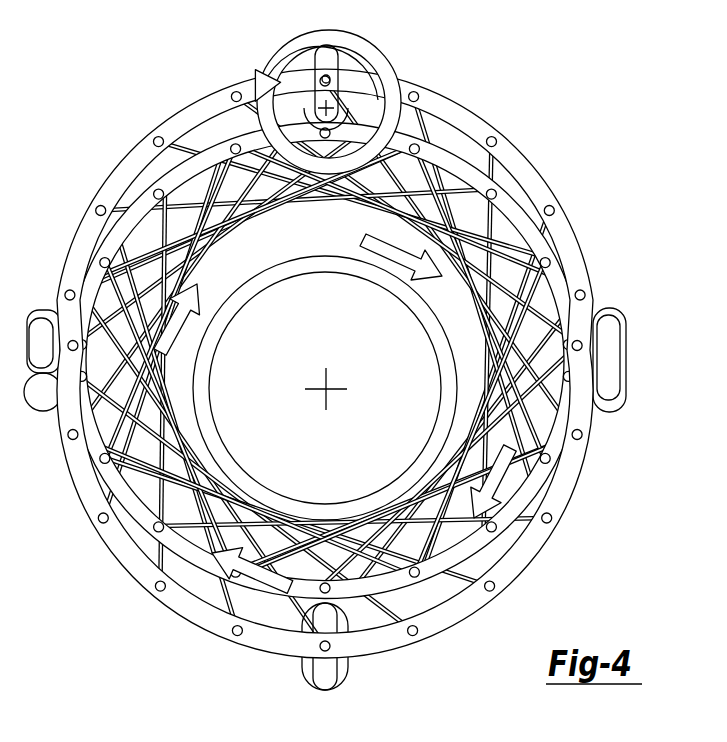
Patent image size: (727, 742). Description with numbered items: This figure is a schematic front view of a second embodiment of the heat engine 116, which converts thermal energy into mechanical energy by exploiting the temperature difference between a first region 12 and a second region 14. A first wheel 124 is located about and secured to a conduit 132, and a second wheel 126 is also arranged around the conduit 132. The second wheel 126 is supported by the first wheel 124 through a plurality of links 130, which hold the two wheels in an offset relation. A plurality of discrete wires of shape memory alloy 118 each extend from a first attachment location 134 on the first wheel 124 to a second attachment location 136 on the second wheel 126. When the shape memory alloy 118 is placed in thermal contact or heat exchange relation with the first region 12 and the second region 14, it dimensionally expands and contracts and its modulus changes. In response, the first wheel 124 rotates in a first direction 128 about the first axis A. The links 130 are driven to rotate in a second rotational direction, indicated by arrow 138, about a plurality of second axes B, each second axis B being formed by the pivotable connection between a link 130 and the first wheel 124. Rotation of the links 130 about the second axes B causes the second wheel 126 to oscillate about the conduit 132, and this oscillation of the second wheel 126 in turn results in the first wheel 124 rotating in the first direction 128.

The first region 12 is at (338, 322).
The second region 14 is at (59, 231).
The heat engine 116 is at (113, 103).
The shape memory alloy 118 is at (186, 138).
The first wheel 124 is at (362, 361).
The second wheel 126 is at (455, 103).
The first direction 128 is at (500, 480).
The links 130 is at (298, 56).
The conduit 132 is at (415, 463).
The first attachment location 134 is at (551, 264).
The second attachment location 136 is at (156, 140).
The arrow 138 is at (342, 88).
The first axis A is at (320, 388).
The second axes B is at (332, 106).